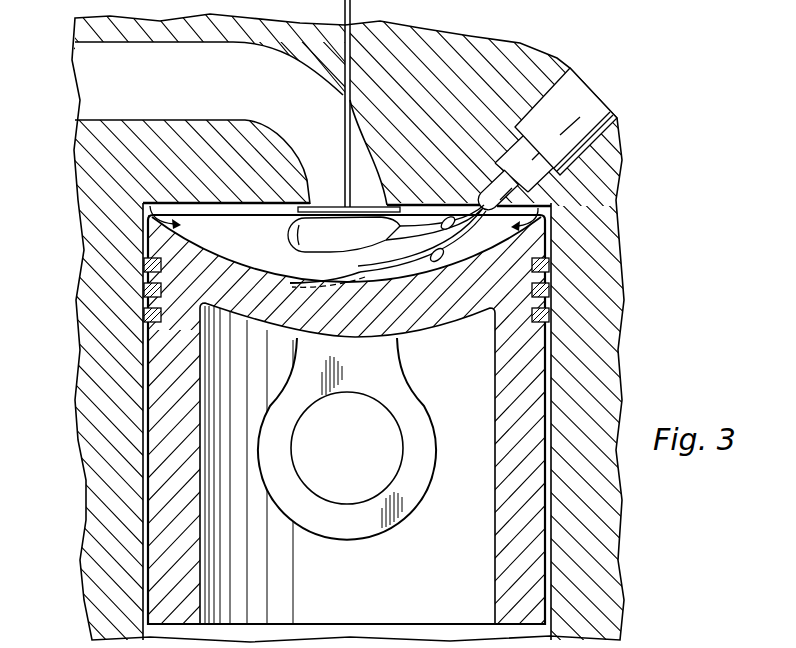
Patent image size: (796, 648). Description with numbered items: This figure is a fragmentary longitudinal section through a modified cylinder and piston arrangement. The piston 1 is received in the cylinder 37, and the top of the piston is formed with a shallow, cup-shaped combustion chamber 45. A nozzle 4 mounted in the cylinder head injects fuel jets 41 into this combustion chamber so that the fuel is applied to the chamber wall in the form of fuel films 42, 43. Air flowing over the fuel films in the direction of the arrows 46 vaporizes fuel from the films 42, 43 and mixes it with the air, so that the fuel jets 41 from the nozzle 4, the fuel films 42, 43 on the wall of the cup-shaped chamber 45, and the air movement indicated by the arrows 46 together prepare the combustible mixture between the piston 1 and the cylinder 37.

The piston 1 is at (527, 415).
The nozzle 4 is at (530, 196).
The cylinder 37 is at (593, 366).
The fuel jet 41 is at (446, 218).
The fuel film 42 is at (290, 236).
The fuel film 43 is at (372, 277).
The shallow cup-shaped combustion chamber 45 is at (150, 330).
The arrows 46 is at (143, 208).